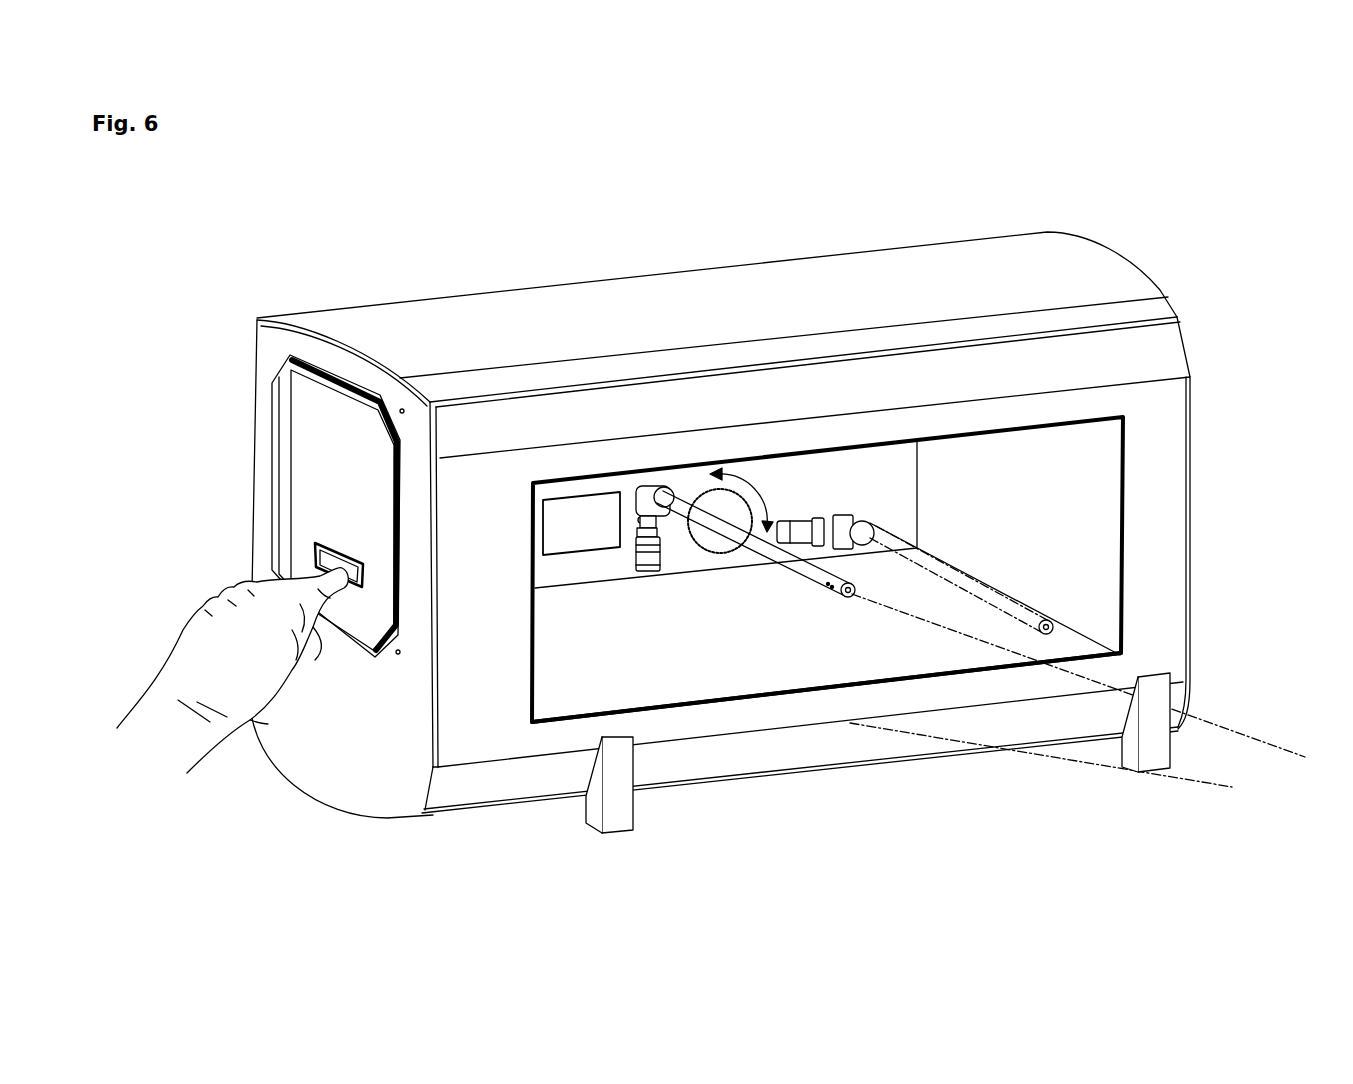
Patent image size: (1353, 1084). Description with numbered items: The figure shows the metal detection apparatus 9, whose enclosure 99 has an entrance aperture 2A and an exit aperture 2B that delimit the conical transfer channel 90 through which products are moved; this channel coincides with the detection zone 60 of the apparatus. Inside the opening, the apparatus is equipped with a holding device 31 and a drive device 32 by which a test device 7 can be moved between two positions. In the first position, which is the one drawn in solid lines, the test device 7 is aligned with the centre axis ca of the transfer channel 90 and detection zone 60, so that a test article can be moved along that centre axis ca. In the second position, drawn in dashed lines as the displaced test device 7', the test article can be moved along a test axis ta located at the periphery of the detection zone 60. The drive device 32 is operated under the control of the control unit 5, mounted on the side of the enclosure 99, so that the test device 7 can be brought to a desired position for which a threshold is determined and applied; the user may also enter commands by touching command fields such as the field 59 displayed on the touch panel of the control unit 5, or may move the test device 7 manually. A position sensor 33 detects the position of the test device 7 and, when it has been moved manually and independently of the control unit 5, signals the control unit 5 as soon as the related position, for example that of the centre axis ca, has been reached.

The metal detection apparatus 9 is at (733, 228).
The enclosure 99 is at (480, 702).
The control unit 5 is at (330, 435).
The test button 59 is at (337, 565).
The position sensor 33 is at (581, 523).
The drive device 32 is at (720, 521).
The holding device 31 is at (749, 500).
The test device 7 is at (755, 556).
The test tube in rotated position 7' is at (961, 574).
The entrance aperture 2A is at (567, 590).
The exit aperture 2B is at (687, 703).
The transfer channel 90 is at (827, 626).
The detection zone 60 is at (807, 650).
The test axis ta is at (1238, 722).
The centre axis ca is at (1213, 778).